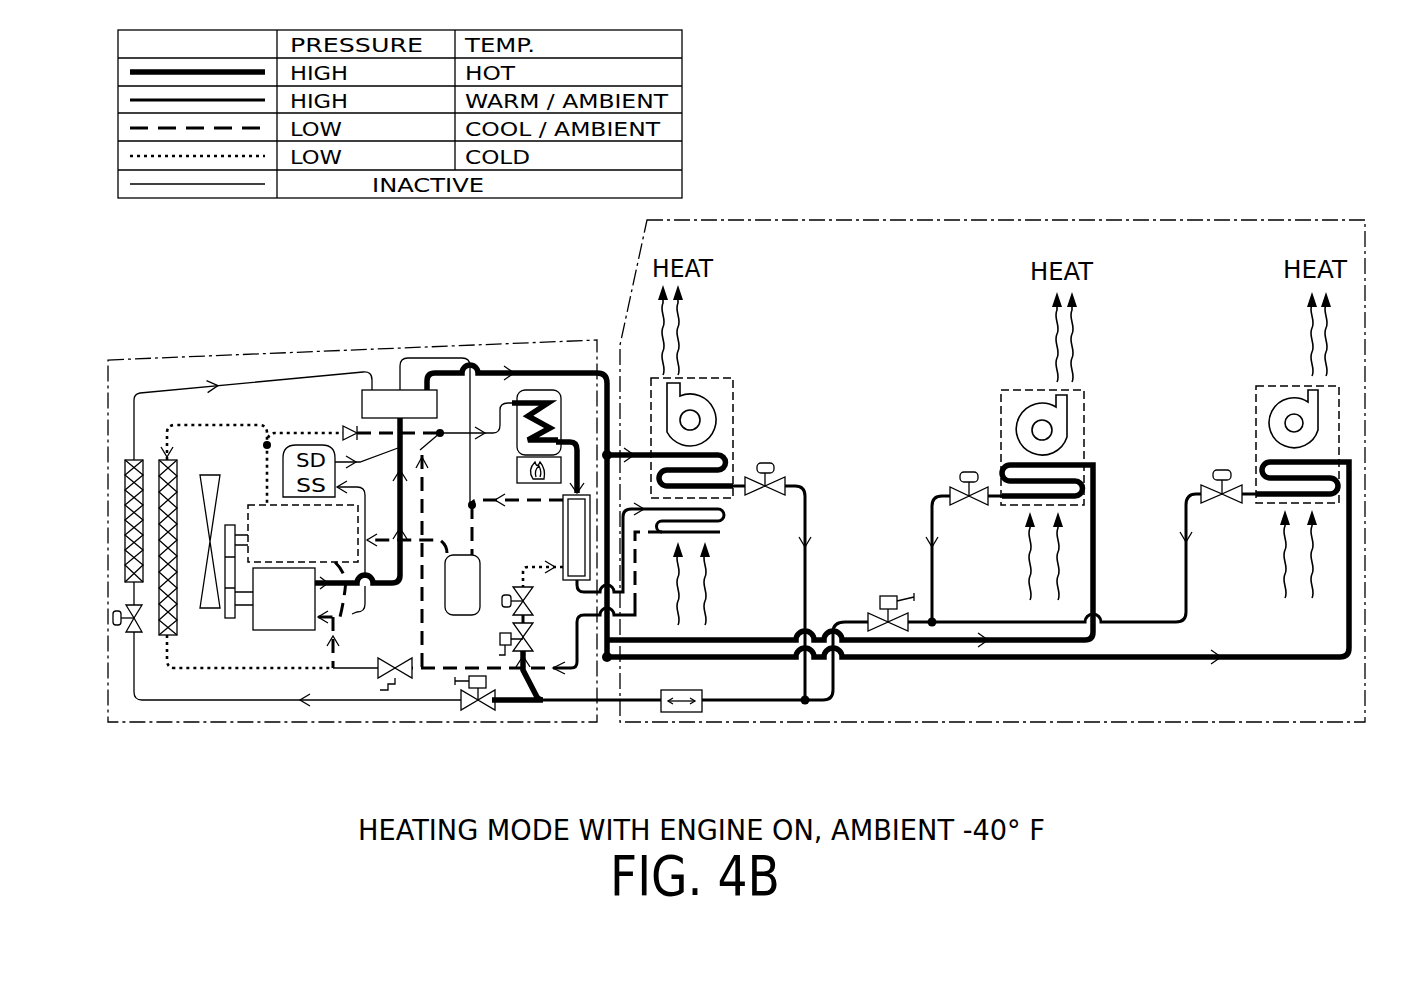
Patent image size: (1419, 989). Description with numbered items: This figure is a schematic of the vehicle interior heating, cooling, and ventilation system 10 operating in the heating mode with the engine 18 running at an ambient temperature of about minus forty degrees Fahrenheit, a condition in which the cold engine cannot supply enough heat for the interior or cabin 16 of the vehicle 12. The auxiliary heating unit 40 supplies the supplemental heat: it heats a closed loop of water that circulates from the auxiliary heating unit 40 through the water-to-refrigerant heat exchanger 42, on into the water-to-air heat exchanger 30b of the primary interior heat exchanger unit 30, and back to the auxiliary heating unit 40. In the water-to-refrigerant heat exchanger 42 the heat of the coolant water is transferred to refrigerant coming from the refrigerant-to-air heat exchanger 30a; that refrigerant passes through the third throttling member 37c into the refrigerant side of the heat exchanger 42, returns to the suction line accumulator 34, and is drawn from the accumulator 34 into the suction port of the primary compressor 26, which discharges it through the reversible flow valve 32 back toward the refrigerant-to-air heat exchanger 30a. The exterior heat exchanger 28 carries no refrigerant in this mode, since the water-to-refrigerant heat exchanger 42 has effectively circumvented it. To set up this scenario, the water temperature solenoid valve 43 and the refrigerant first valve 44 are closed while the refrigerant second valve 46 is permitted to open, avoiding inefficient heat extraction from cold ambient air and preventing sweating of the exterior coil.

The vehicle interior heating, cooling, and ventilation system 10 is at (697, 748).
The vehicle 12 is at (976, 218).
The interior or cabin 16 is at (897, 298).
The engine or other prime mover 18 is at (263, 512).
The primary compressor 26 is at (282, 632).
The exterior heat exchanger 28 is at (129, 458).
The primary interior air handler or heat exchanger unit 30 is at (725, 398).
The refrigerant-to-air heat exchanger 30a is at (720, 452).
The water-to-air heat exchanger 30b is at (728, 533).
The reversible flow valve 32 is at (382, 390).
The suction line accumulator 34 is at (467, 616).
The third throttling member 37c is at (534, 606).
The auxiliary heating unit 40 is at (545, 390).
The water-to-refrigerant heat exchanger 42 is at (563, 536).
The water solenoid valve 43 is at (390, 672).
The first valve 44 is at (473, 712).
The second valve 46 is at (536, 648).